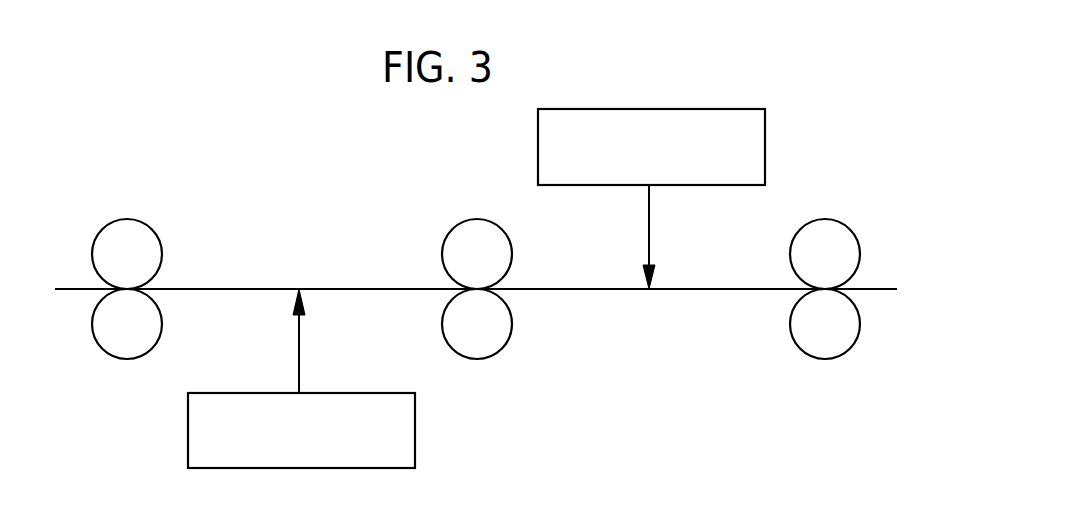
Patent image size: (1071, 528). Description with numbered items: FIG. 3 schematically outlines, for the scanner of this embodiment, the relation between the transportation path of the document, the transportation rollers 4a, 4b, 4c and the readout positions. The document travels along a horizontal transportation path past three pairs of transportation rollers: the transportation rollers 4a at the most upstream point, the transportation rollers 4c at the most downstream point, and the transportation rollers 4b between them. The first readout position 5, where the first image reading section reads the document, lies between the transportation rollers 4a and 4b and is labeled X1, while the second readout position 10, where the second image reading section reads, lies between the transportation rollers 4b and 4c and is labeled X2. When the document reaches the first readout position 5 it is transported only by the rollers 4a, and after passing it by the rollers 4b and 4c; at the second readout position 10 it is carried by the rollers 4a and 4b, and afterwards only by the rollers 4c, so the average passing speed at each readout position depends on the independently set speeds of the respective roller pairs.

The transportation rollers 4a is at (127, 219).
The transportation rollers 4b is at (477, 219).
The transportation rollers 4c is at (825, 219).
The first readout position 5 is at (299, 289).
The second readout position 10 is at (649, 289).
The first reading position X1 is at (229, 393).
The second reading position X2 is at (602, 185).